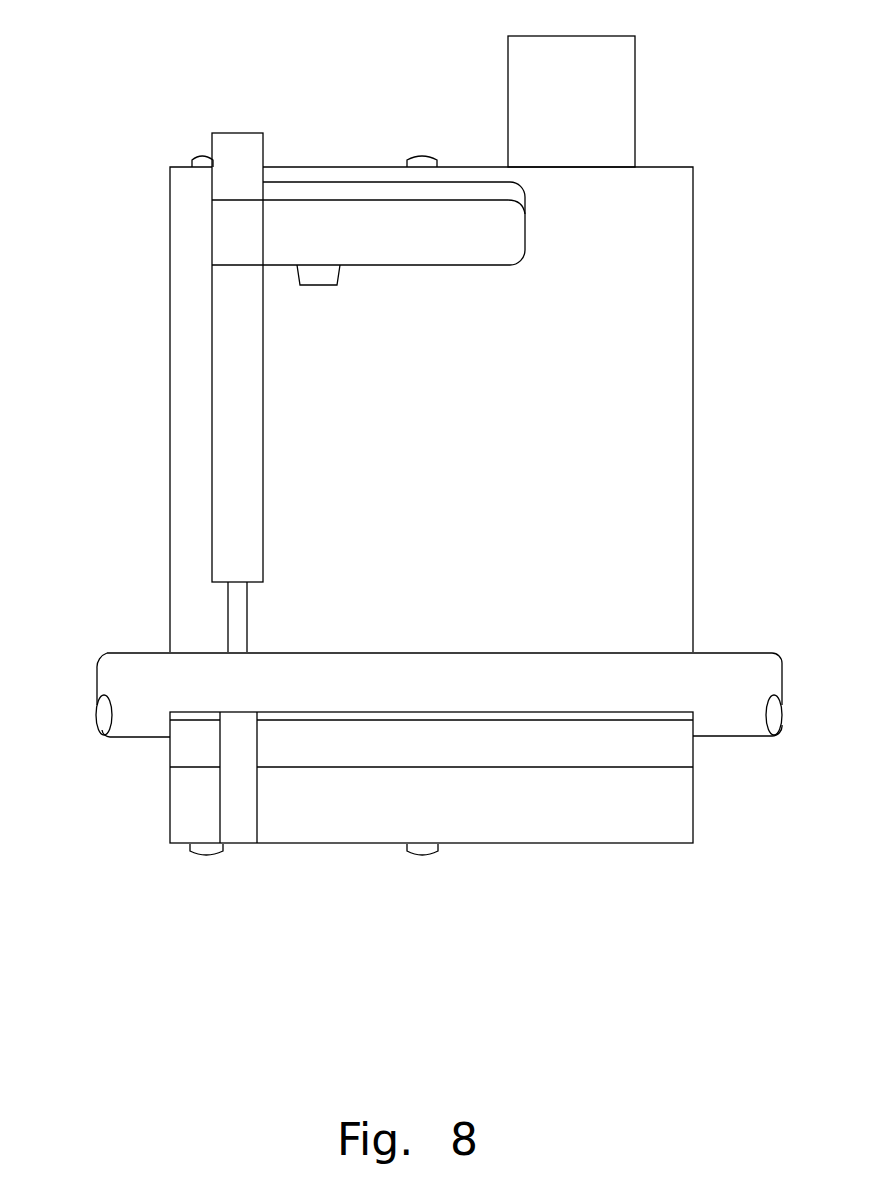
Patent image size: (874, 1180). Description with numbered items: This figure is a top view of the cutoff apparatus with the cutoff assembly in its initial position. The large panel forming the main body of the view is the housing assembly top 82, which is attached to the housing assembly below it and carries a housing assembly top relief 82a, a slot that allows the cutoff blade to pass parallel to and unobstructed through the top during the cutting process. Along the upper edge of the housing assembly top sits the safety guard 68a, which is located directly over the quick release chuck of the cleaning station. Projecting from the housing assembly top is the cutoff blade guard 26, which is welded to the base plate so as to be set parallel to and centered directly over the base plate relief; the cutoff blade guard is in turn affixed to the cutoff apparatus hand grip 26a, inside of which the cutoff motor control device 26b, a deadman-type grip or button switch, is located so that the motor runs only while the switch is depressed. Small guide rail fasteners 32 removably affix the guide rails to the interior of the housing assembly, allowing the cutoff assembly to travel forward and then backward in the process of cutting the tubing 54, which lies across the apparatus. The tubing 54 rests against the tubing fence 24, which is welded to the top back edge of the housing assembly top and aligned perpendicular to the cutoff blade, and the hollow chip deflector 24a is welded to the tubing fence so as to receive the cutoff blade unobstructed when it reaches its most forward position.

The housing assembly top 82 is at (658, 410).
The housing assembly top relief 82a is at (238, 632).
The safety guard 68a is at (525, 82).
The cutoff blade guard 26 is at (252, 508).
The cutoff apparatus hand grip 26a is at (453, 255).
The cutoff motor control device 26b is at (327, 275).
The guide rail fastener 32 is at (410, 157).
The tubing 54 is at (137, 678).
The tubing fence 24 is at (667, 818).
The chip deflector 24a is at (240, 780).